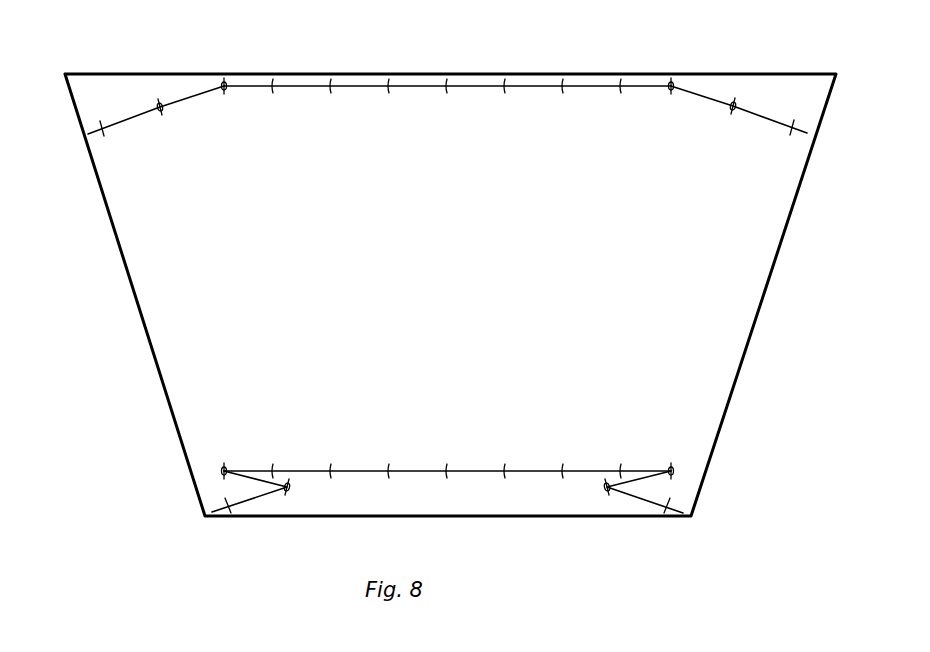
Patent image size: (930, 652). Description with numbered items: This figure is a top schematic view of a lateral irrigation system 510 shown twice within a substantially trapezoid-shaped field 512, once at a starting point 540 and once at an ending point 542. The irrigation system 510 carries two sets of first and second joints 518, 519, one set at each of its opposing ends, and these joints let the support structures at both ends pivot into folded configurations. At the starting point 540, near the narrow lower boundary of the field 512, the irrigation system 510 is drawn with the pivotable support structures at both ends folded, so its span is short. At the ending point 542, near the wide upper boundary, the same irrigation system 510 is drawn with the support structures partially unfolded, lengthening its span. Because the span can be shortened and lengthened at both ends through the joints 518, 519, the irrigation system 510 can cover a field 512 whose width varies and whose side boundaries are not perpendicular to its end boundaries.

The irrigation system 510 is at (442, 140).
The field 512 is at (177, 300).
The first joint 518 is at (224, 84).
The second joint 519 is at (163, 110).
The starting point 540 is at (148, 473).
The ending point 542 is at (34, 87).